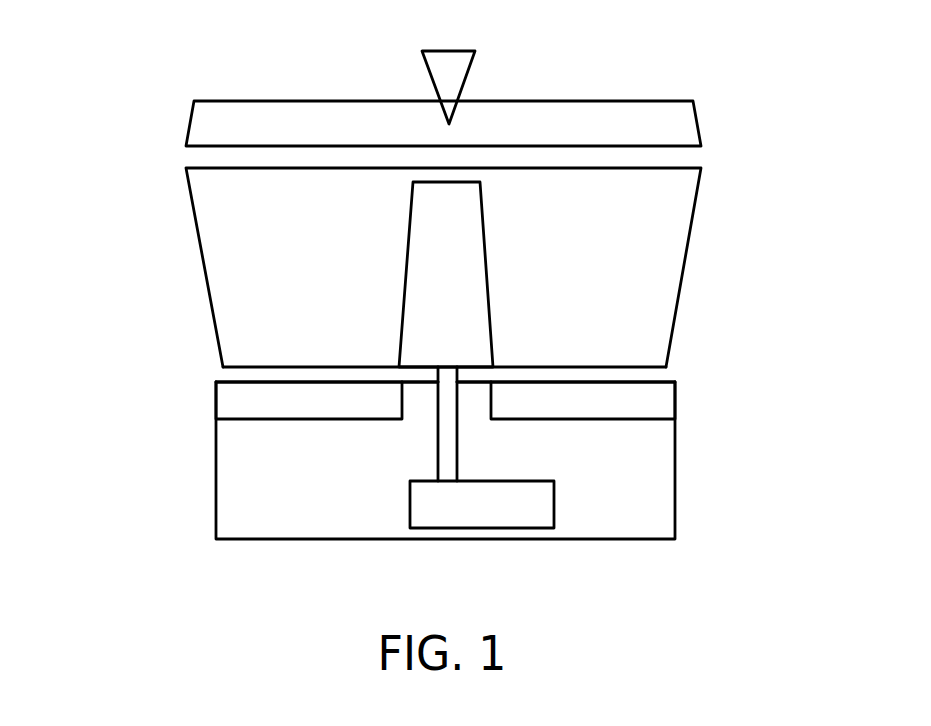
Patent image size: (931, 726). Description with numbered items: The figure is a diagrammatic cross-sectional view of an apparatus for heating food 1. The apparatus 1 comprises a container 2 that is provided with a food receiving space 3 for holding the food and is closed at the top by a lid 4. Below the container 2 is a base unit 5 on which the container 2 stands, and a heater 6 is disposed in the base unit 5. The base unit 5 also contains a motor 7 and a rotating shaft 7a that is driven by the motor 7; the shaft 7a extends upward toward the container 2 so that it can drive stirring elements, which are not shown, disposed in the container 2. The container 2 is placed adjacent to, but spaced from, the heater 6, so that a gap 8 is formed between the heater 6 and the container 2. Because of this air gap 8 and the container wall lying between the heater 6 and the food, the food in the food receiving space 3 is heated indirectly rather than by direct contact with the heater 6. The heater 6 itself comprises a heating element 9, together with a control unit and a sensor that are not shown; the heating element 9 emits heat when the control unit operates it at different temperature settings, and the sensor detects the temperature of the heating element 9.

The apparatus for heating food 1 is at (138, 108).
The container 2 is at (690, 248).
The food receiving space 3 is at (236, 251).
The lid 4 is at (598, 120).
The base unit 5 is at (675, 473).
The heater 6 is at (661, 403).
The motor 7 is at (483, 509).
The rotating shaft 7a is at (447, 437).
The gap 8 is at (661, 374).
The heating element 9 is at (231, 400).